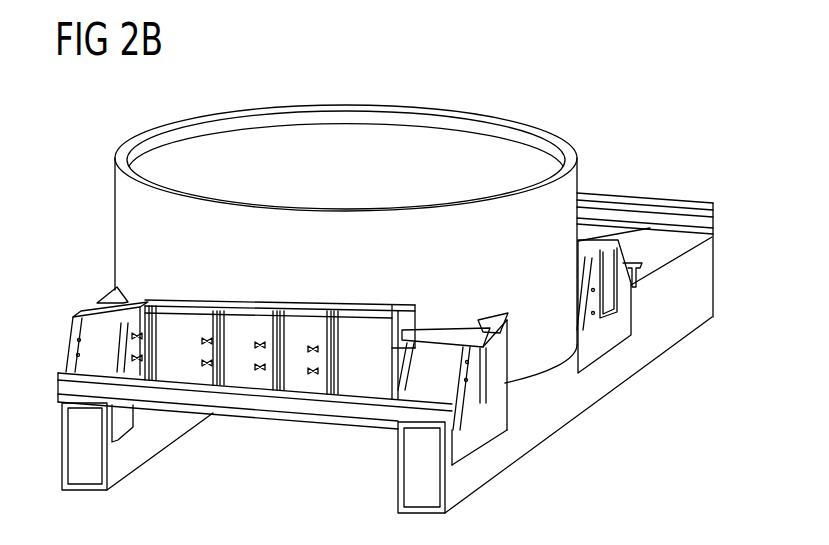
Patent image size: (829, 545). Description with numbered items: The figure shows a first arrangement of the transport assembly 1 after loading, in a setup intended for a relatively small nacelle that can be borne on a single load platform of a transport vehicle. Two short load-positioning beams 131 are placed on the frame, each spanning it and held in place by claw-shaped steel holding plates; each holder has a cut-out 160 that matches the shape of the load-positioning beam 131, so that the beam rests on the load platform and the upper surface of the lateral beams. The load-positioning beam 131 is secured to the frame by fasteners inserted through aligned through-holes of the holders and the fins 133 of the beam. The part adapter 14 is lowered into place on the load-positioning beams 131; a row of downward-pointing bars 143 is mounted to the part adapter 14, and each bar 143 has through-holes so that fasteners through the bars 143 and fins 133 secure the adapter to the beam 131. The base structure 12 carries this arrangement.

The transport assembly 1 is at (632, 84).
The base frame 12 is at (127, 461).
The part adapter 14 is at (264, 122).
The load-positioning beam 131 is at (102, 332).
The fin 133 is at (276, 385).
The downward-pointing bar 143 is at (262, 367).
The cut-out 160 is at (480, 430).